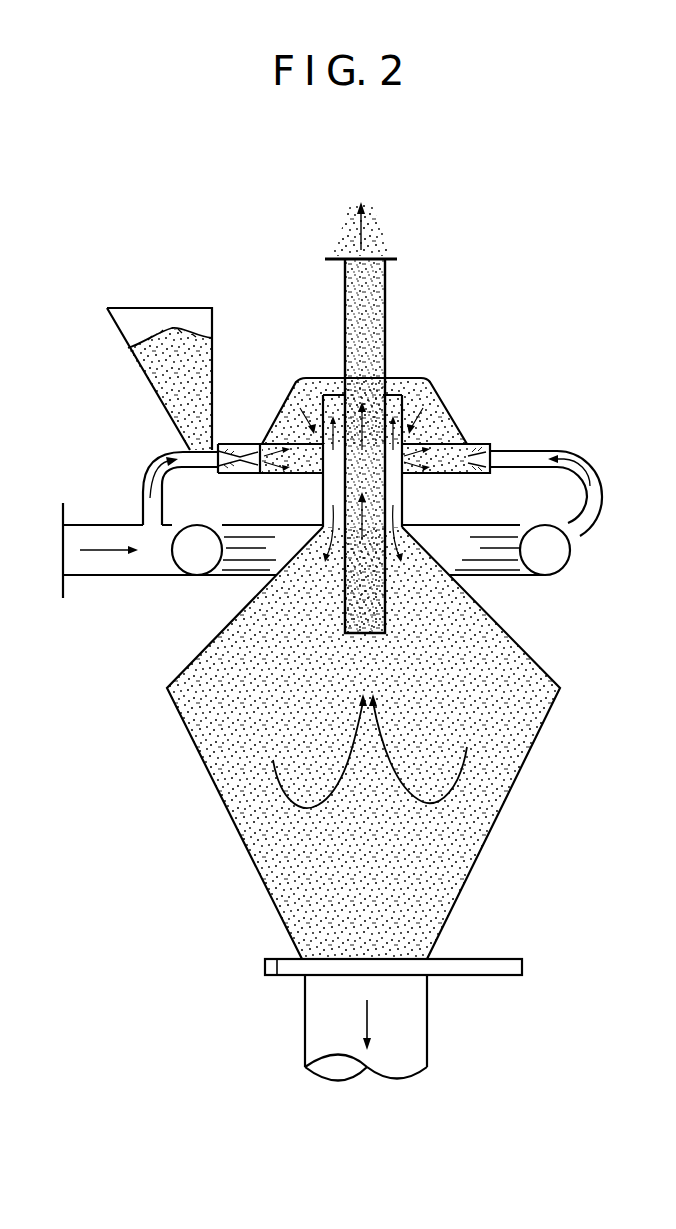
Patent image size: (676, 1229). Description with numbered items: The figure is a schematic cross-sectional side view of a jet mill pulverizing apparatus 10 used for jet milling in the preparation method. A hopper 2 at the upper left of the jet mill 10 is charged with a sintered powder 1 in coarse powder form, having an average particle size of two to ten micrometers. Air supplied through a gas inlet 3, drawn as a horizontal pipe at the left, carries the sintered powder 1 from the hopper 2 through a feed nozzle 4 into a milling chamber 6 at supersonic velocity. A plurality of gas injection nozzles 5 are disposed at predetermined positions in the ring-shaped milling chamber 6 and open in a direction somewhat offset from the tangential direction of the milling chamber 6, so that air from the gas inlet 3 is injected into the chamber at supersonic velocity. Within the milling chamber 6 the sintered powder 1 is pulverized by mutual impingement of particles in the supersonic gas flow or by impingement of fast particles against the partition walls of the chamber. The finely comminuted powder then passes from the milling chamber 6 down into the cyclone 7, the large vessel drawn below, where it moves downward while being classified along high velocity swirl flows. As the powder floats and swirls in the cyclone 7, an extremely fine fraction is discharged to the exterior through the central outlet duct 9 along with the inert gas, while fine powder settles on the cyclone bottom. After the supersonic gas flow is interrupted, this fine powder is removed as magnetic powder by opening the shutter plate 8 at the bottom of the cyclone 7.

The sintered powder 1 is at (167, 332).
The hopper 2 is at (138, 362).
The gas inlet 3 is at (105, 525).
The feed nozzle 4 is at (242, 436).
The gas injection nozzles 5 is at (485, 436).
The milling chamber 6 is at (408, 432).
The cyclone 7 is at (497, 808).
The shutter plate 8 is at (502, 959).
The outlet duct 9 is at (385, 295).
The jet mill pulverizing apparatus 10 is at (302, 304).